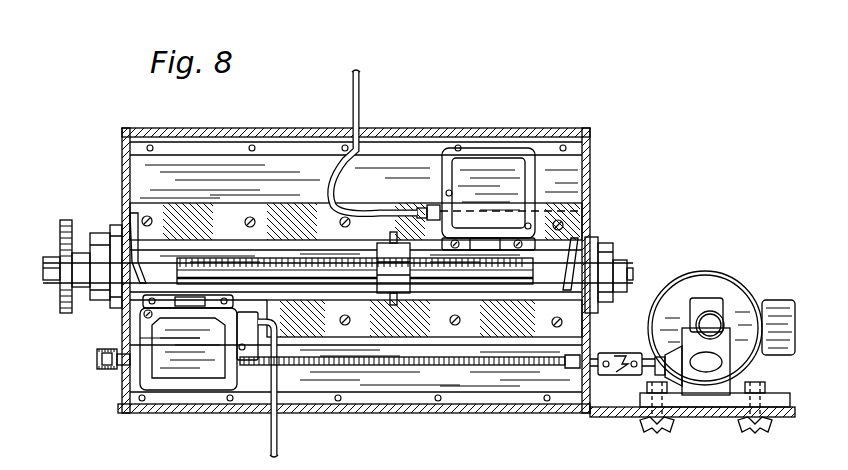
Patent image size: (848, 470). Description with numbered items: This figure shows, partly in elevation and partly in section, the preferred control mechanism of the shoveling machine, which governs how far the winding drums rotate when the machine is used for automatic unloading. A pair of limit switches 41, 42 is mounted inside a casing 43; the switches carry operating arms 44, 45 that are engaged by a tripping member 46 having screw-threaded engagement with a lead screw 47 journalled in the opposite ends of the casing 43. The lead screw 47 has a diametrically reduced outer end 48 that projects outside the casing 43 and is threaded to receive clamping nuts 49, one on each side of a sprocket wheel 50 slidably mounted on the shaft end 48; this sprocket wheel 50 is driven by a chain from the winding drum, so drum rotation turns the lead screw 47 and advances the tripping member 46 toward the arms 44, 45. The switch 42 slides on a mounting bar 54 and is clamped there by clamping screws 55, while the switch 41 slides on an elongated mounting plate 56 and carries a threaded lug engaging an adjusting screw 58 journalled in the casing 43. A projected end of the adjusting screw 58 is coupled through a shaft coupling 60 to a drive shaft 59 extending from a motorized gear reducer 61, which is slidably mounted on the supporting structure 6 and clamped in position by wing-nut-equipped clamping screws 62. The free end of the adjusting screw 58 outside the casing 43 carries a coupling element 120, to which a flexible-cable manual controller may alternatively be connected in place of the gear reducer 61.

The supporting structure 6 is at (598, 413).
The limit switch 41 is at (193, 380).
The limit switch 42 is at (490, 170).
The casing 43 is at (284, 132).
The operating arm 44 is at (200, 300).
The operating arm 45 is at (467, 247).
The tripping member 46 is at (385, 265).
The lead screw 47 is at (588, 268).
The diametrically reduced outer end 48 is at (50, 279).
The clamping nuts 49 is at (80, 255).
The sprocket wheel 50 is at (65, 218).
The mounting bar 54 is at (200, 218).
The clamping screws 55 is at (535, 258).
The elongated mounting plate 56 is at (484, 332).
The adjusting screw 58 is at (412, 362).
The drive shaft 59 is at (647, 358).
The shaft coupling 60 is at (625, 349).
The motorized gear reducer 61 is at (697, 345).
The wing-nut-equipped clamping screws 62 is at (657, 434).
The coupling element 120 is at (105, 368).